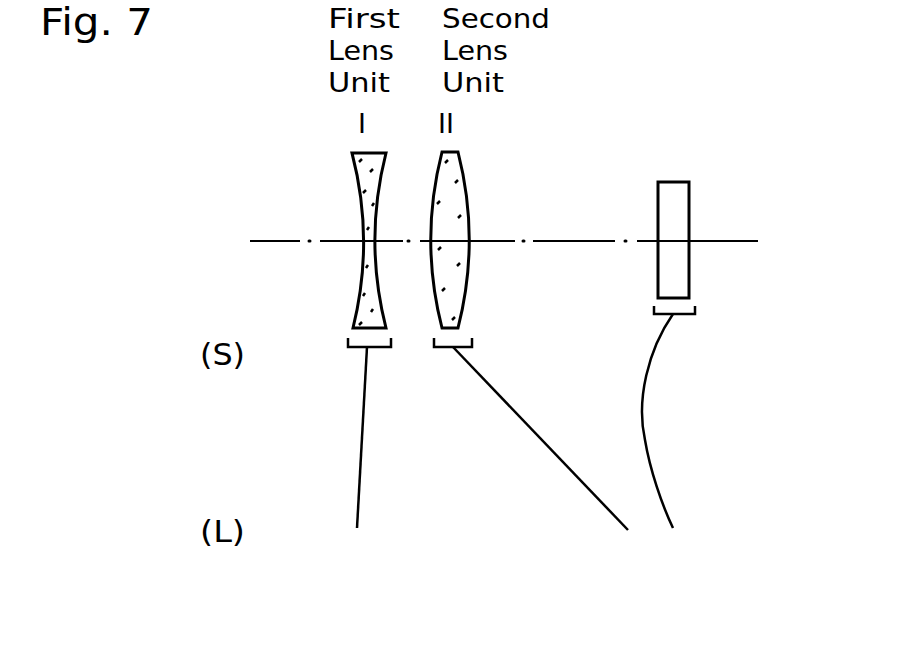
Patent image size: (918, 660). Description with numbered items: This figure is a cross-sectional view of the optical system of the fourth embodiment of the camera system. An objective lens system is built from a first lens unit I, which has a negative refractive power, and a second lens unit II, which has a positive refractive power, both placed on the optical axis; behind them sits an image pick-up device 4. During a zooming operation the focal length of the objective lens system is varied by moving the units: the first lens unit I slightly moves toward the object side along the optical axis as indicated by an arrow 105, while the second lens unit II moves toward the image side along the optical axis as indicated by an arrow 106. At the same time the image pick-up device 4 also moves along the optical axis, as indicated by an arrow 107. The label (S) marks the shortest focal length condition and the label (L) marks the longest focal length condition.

The image pick-up device 4 is at (680, 182).
The arrow 105 is at (362, 445).
The arrow 106 is at (592, 492).
The arrow 107 is at (647, 441).